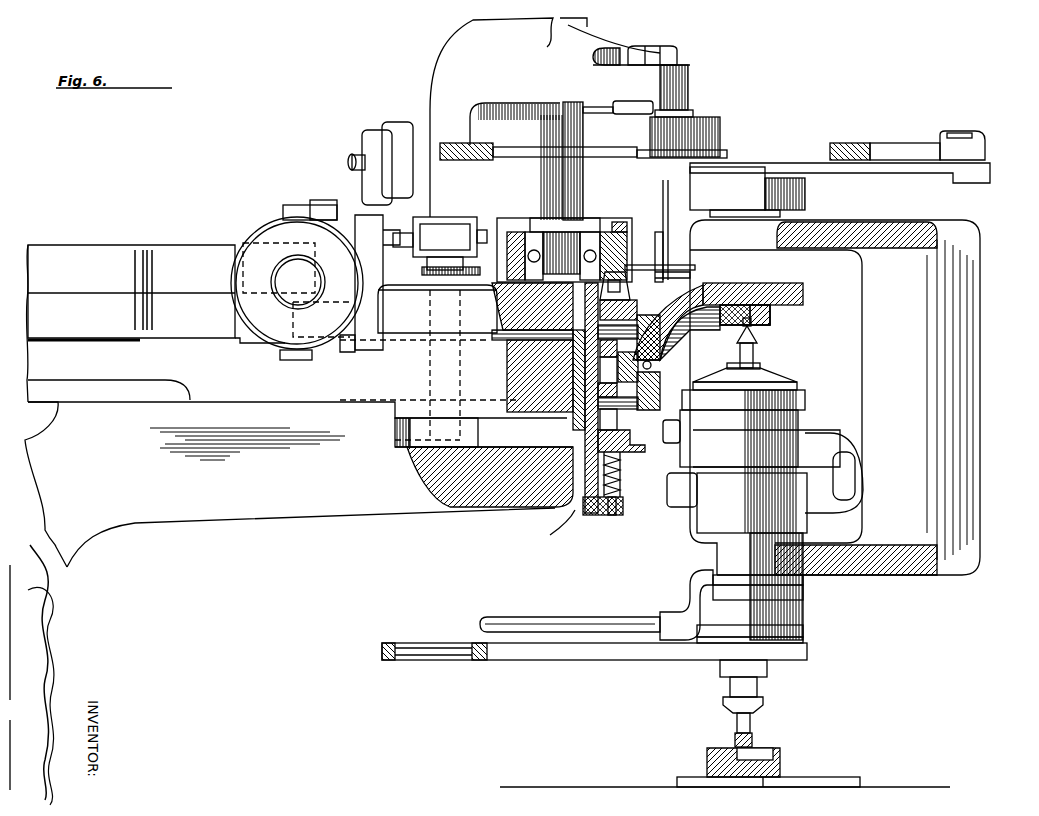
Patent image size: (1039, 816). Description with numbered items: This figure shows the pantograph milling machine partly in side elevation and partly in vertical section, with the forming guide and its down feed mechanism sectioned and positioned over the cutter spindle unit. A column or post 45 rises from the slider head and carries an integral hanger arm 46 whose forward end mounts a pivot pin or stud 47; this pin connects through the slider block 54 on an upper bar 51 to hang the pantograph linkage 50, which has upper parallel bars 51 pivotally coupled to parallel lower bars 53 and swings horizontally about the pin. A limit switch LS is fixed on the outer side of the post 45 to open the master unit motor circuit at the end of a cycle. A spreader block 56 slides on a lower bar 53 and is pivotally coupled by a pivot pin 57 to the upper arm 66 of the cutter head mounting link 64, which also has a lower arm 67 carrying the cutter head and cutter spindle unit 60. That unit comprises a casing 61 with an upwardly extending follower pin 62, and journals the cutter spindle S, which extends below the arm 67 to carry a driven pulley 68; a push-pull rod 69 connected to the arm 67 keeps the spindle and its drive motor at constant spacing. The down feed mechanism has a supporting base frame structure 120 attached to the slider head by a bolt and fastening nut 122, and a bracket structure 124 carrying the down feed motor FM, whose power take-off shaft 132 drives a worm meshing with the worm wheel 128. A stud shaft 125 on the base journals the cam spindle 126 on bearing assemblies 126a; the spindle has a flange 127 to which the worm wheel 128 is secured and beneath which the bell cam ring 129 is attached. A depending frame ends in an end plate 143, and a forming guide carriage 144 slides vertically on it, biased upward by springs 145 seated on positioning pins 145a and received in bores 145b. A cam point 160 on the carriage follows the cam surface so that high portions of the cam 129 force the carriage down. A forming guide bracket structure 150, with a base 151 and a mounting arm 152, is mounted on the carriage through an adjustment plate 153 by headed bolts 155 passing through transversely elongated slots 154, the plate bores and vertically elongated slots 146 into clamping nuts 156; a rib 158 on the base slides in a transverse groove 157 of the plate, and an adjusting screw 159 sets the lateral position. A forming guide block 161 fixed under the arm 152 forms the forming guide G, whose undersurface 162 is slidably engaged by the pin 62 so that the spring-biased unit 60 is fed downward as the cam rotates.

The down feed driving motor FM is at (262, 225).
The limit switch LS is at (352, 135).
The column or post 45 is at (440, 118).
The hanger arm 46 is at (588, 45).
The pivot pin or stud 47 is at (655, 50).
The pantograph linkage 50 is at (860, 142).
The upper parallel bars 51 is at (478, 160).
The parallel lower bars 53 is at (868, 174).
The slider block 54 is at (705, 120).
The spreader block 56 is at (800, 192).
The pivot pin or stud 57 is at (785, 213).
The cutter head and cutter spindle unit 60 is at (700, 541).
The barrel or casing 61 is at (795, 412).
The follower point or guide pin 62 is at (760, 338).
The cutter head mounting and carrying link 64 is at (950, 420).
The upper arm 66 is at (805, 250).
The lower arm 67 is at (838, 575).
The driven pulley 68 is at (690, 665).
The push-pull rod 69 is at (540, 617).
The base plate or supporting frame structure 120 is at (470, 285).
The fastening nut 122 is at (420, 432).
The bracket structure 124 is at (365, 340).
The stud shaft 125 is at (625, 235).
The cam spindle 126 is at (538, 232).
The anti-friction bearing assemblies 126a is at (560, 232).
The horizontal flange 127 is at (620, 226).
The worm wheel 128 is at (632, 238).
The bell cam forming ring 129 is at (710, 262).
The power take-off shaft 132 is at (393, 238).
The end plate 143 is at (600, 515).
The forming guide carriage 144 is at (598, 437).
The springs 145 is at (622, 472).
The positioning pins 145a is at (612, 515).
The vertical bores 145b is at (550, 535).
The vertically elongated slots 146 is at (650, 320).
The forming guide bracket structure 150 is at (805, 290).
The base 151 is at (652, 375).
The forming guide mounting arm 152 is at (740, 300).
The adjustment plate 153 is at (620, 303).
The transversely elongated slots 154 is at (675, 292).
The headed attaching bolts 155 is at (620, 432).
The clamping nuts 156 is at (590, 372).
The transverse groove 157 is at (645, 382).
The transversely disposed rib 158 is at (540, 375).
The adjusting screw 159 is at (650, 362).
The cam point or follower pin 160 is at (635, 250).
The forming guide block 161 is at (757, 305).
The forming guide surface 162 is at (775, 322).
The forming guide G is at (785, 310).
The cutter spindle S is at (758, 684).